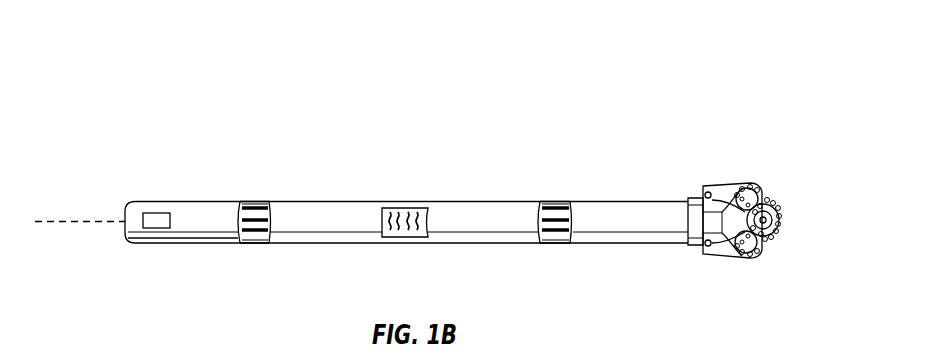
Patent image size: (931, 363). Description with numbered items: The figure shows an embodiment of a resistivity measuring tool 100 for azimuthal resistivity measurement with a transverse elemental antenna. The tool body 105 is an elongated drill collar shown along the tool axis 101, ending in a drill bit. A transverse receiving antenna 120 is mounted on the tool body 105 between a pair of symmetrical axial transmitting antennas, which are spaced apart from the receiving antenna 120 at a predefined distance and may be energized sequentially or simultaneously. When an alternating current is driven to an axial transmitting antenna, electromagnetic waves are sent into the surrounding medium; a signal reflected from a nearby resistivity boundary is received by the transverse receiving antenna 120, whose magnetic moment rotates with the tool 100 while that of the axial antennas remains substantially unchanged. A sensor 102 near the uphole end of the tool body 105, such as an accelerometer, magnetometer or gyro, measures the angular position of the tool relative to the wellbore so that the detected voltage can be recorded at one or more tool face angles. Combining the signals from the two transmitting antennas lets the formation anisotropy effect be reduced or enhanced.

The resistivity measuring tool 100 is at (190, 131).
The tool axis 101 is at (86, 223).
The sensor 102 is at (156, 214).
The tool body 105 is at (662, 243).
The transverse receiving antenna 120 is at (406, 237).